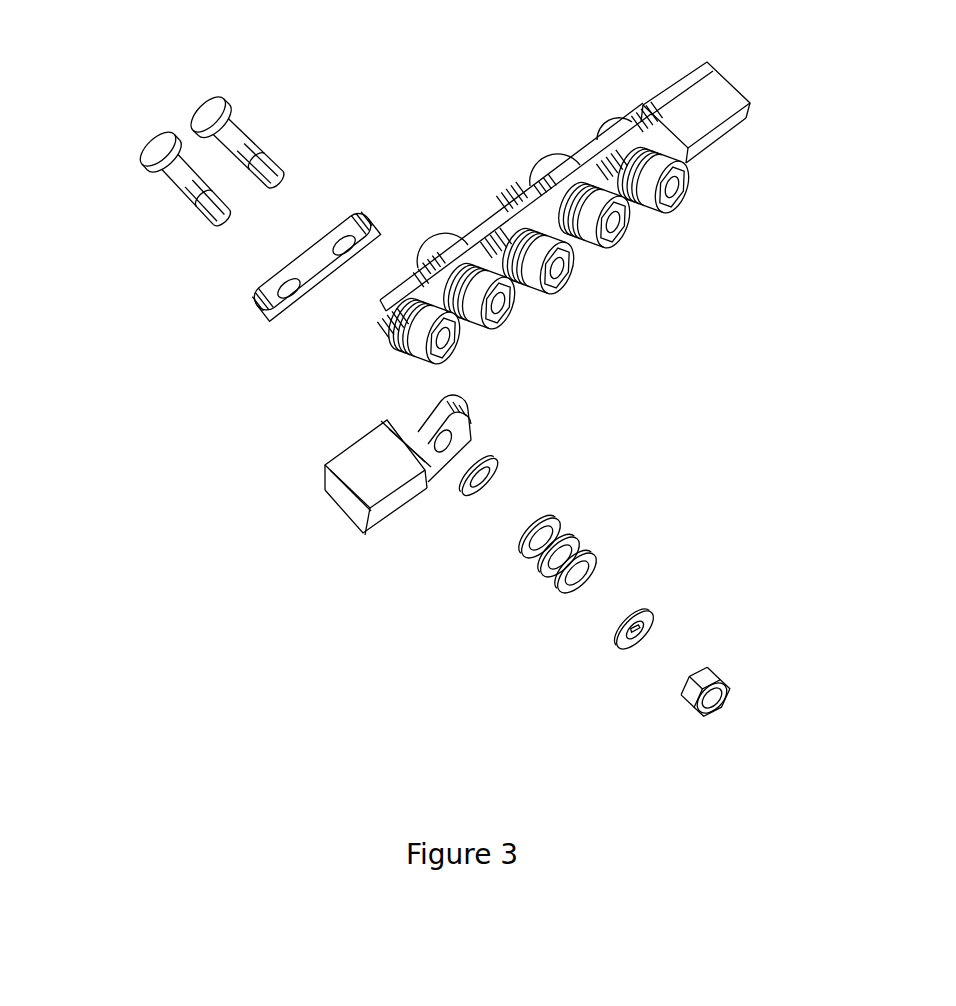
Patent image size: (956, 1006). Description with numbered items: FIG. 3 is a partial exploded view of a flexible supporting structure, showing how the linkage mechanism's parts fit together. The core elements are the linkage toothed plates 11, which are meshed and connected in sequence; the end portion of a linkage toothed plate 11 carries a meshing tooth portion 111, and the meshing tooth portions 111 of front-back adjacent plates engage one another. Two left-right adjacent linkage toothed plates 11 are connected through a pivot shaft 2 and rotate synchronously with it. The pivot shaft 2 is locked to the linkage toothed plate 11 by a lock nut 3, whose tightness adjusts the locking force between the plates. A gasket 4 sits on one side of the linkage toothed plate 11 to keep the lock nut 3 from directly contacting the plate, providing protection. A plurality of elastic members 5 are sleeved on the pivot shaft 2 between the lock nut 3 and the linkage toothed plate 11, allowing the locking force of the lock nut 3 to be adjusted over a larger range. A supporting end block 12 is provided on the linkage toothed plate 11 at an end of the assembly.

The pivot shaft 2 is at (200, 117).
The lock nut 3 is at (690, 707).
The gasket 4 is at (497, 458).
The elastic member 5 is at (577, 540).
The linkage toothed plate 11 is at (320, 242).
The supporting end block 12 is at (715, 82).
The meshing tooth portion 111 is at (377, 213).